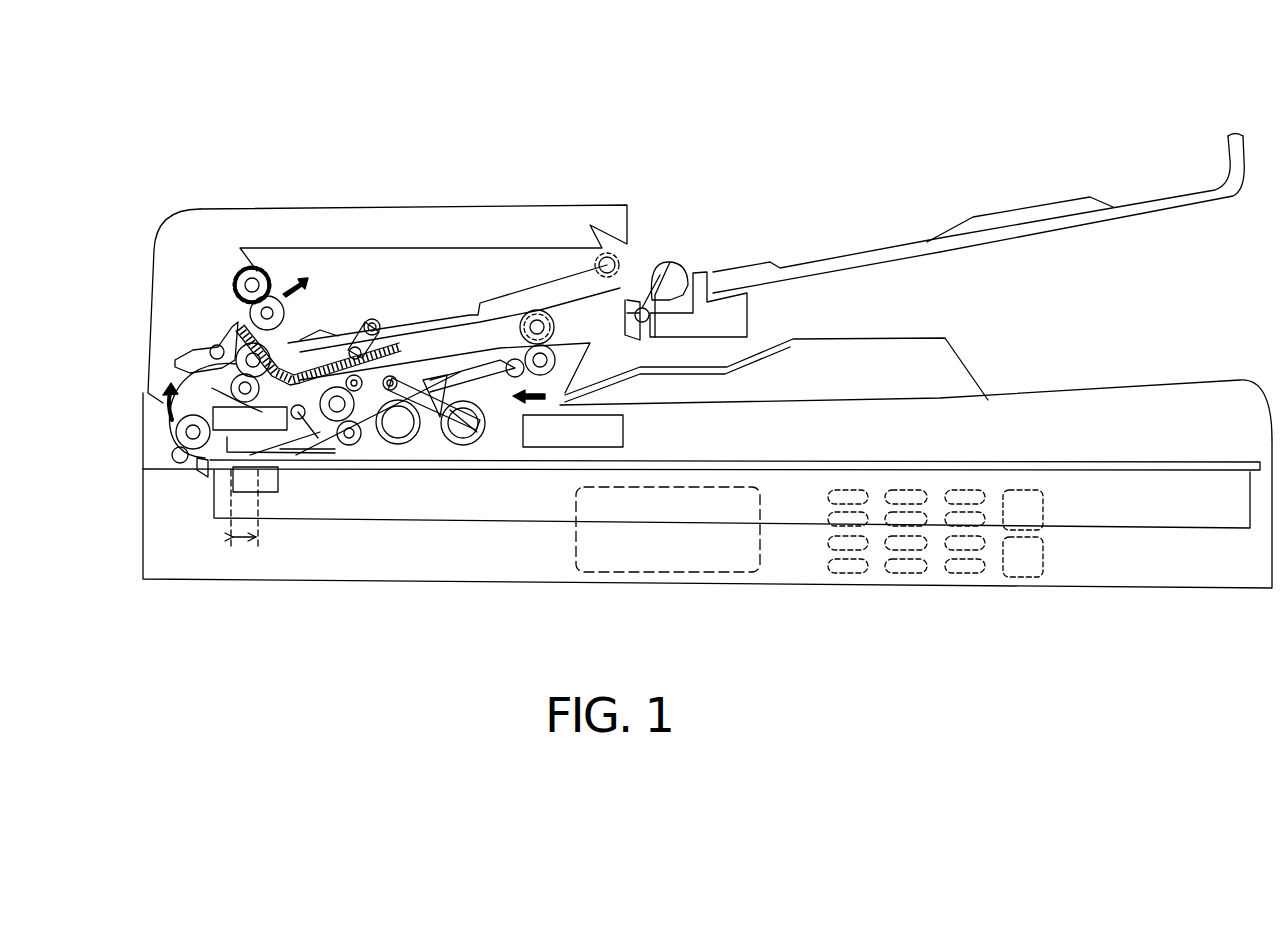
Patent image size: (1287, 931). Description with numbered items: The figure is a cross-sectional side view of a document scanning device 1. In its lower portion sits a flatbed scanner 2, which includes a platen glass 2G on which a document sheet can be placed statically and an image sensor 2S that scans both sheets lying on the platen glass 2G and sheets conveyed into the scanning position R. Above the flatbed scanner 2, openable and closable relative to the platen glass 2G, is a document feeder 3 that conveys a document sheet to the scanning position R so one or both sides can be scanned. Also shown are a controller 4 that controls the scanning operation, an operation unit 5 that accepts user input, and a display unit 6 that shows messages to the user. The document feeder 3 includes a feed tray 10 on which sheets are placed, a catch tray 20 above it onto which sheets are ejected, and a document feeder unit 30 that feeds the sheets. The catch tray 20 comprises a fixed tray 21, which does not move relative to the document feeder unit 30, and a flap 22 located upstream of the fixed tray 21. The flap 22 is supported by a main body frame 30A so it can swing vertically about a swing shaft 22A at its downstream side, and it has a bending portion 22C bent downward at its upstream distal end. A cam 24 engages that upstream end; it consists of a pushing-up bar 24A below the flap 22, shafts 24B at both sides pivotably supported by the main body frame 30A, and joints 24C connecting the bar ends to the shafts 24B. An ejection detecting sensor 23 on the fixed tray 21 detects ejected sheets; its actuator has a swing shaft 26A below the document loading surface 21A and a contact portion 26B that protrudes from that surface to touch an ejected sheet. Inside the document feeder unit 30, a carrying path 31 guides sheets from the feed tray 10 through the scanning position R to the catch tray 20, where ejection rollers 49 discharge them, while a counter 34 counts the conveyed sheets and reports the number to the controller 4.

The document scanning device 1 is at (766, 82).
The flatbed scanner 2 is at (143, 517).
The platen glass 2G is at (492, 469).
The image sensor 2S is at (274, 483).
The document feeder 3 is at (457, 134).
The controller 4 is at (624, 430).
The operation unit 5 is at (1060, 572).
The display unit 6 is at (697, 554).
The feed tray 10 is at (1120, 384).
The catch tray 20 is at (1030, 175).
The fixed tray 21 is at (783, 238).
The document loading surface 21A is at (711, 273).
The flap 22 is at (502, 305).
The swing shaft 22A is at (597, 265).
The bending portion 22C is at (318, 335).
The ejection detecting sensor 23 is at (691, 262).
The cam 24 is at (370, 318).
The pushing-up bar 24A is at (357, 345).
The shaft 24B is at (378, 319).
The joint 24C is at (382, 326).
The swing shaft 26A is at (643, 308).
The contact portion 26B is at (678, 263).
The document feeder unit 30 is at (355, 196).
The main body frame 30A is at (152, 268).
The carrying path 31 is at (160, 437).
The counter 34 is at (172, 384).
The ejection rollers 49 is at (254, 312).
The scanning position R is at (244, 519).